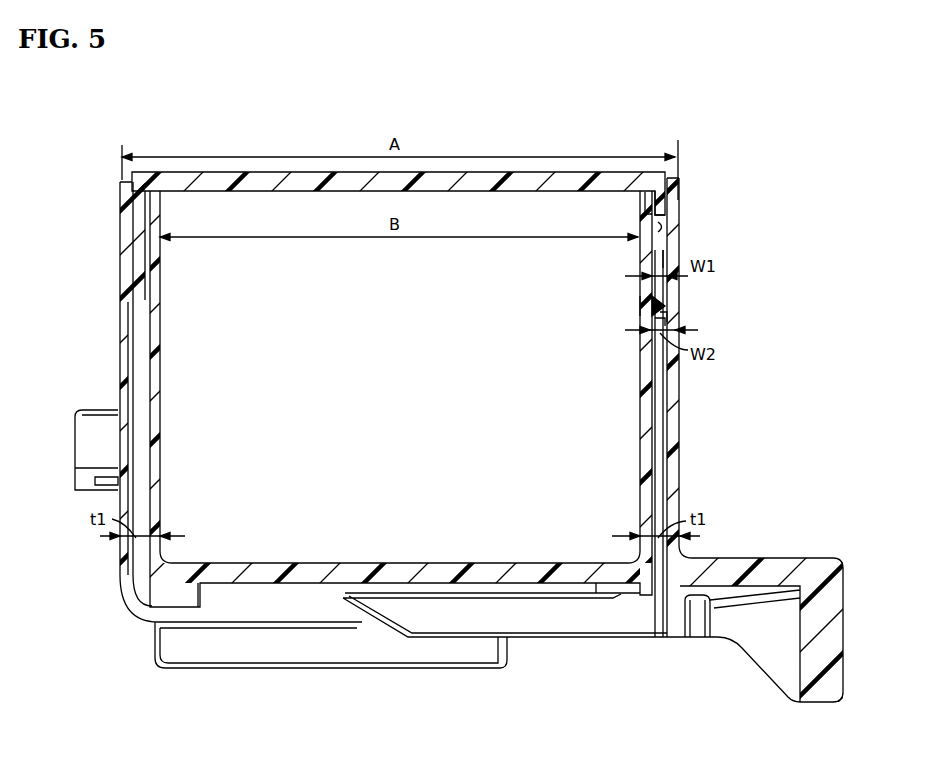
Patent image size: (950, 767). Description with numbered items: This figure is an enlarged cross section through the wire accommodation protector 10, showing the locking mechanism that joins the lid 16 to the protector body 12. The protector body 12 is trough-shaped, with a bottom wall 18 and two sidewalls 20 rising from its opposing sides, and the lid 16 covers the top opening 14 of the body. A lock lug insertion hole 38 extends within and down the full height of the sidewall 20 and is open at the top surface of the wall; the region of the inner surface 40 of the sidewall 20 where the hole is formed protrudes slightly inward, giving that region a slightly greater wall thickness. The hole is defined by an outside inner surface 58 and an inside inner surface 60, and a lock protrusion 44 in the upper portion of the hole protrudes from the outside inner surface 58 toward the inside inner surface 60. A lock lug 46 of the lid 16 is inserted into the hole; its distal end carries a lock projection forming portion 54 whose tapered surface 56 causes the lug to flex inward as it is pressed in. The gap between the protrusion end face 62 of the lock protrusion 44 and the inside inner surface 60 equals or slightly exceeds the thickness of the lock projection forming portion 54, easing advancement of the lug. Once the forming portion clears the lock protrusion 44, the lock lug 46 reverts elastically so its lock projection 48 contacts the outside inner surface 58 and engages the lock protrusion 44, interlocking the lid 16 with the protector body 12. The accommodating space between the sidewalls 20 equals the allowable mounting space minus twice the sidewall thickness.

The wire accommodation protector 10 is at (678, 110).
The protector body 12 is at (775, 538).
The top opening 14 is at (644, 192).
The lid 16 is at (552, 132).
The bottom wall 18 is at (527, 575).
The sidewall 20 is at (122, 396).
The lock lug insertion hole 38 is at (650, 212).
The inner surface 40 is at (638, 224).
The lock protrusion 44 is at (666, 301).
The lock lug 46 is at (663, 259).
The lock projection 48 is at (668, 318).
The lock projection forming portion 54 is at (643, 303).
The tapered surface 56 is at (665, 322).
The outside inner surface 58 is at (668, 392).
The inside inner surface 60 is at (655, 421).
The protrusion end face 62 is at (662, 229).